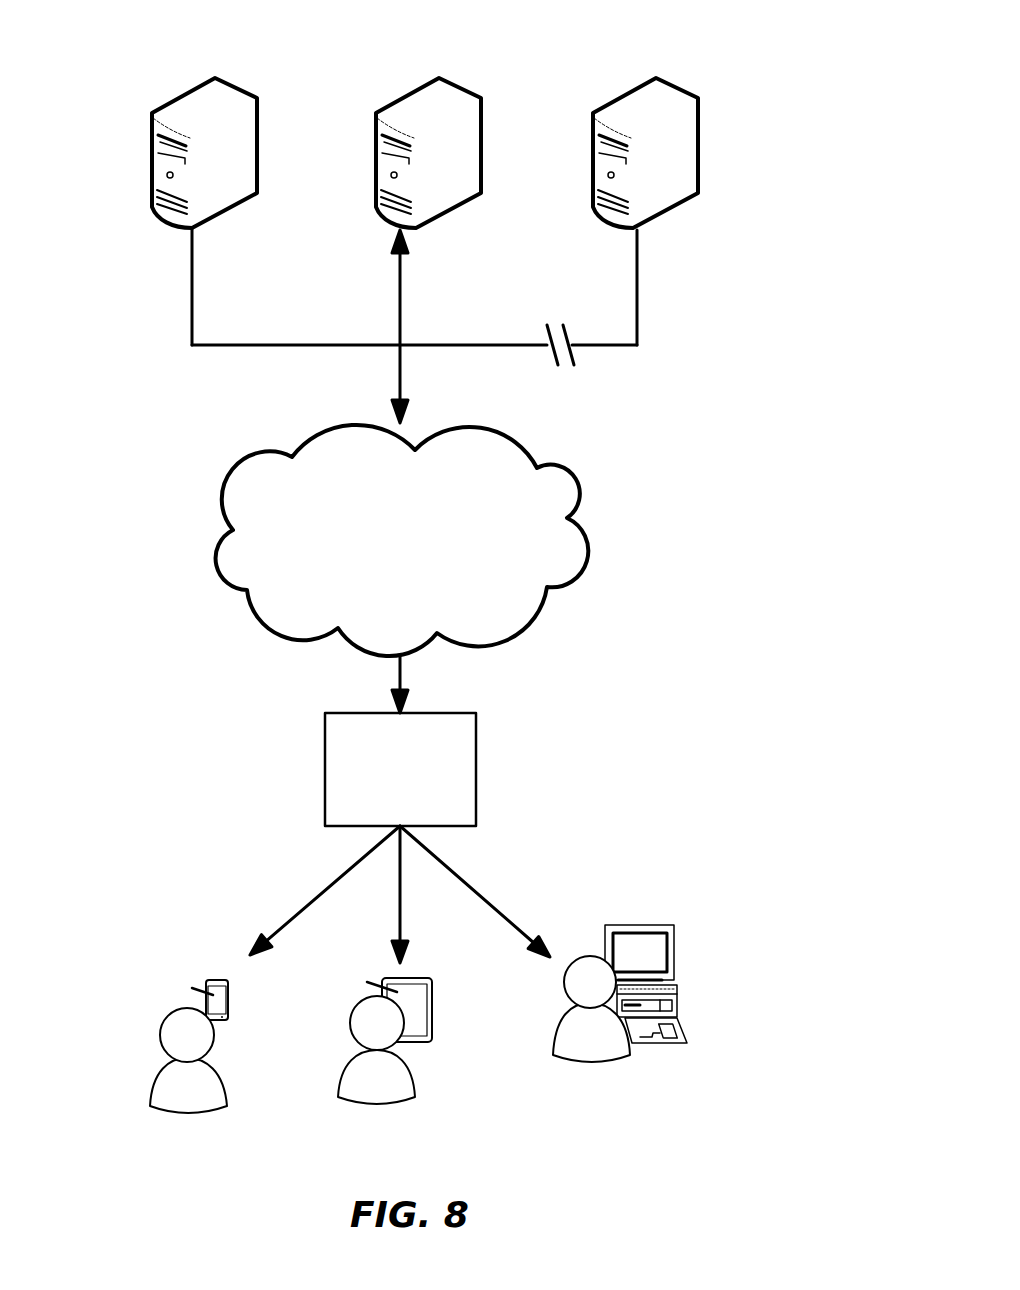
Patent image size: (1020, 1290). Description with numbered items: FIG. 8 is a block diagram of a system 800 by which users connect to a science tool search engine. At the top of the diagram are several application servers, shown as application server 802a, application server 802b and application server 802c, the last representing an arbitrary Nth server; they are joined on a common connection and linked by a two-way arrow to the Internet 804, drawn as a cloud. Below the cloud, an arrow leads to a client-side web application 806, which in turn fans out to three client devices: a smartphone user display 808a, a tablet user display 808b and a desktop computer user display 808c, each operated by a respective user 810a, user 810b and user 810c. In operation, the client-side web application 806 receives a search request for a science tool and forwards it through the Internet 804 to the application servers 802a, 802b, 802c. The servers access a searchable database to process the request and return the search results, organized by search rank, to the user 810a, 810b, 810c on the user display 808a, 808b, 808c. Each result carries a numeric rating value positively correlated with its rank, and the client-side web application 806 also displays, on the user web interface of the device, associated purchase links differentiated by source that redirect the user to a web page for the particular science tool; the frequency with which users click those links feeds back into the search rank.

The system 800 is at (730, 432).
The application server 802a is at (152, 165).
The application server 802b is at (376, 165).
The application server 802c is at (593, 165).
The Internet 804 is at (215, 562).
The client-side web application 806 is at (325, 777).
The user display 808a is at (228, 998).
The user display 808b is at (432, 993).
The user display 808c is at (674, 948).
The user 810a is at (180, 1113).
The user 810b is at (370, 1100).
The user 810c is at (592, 1057).